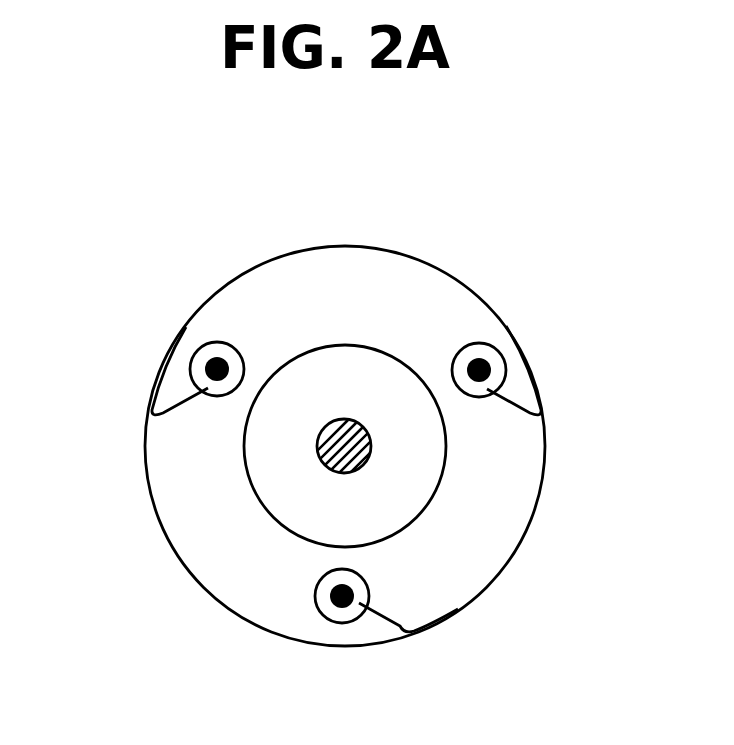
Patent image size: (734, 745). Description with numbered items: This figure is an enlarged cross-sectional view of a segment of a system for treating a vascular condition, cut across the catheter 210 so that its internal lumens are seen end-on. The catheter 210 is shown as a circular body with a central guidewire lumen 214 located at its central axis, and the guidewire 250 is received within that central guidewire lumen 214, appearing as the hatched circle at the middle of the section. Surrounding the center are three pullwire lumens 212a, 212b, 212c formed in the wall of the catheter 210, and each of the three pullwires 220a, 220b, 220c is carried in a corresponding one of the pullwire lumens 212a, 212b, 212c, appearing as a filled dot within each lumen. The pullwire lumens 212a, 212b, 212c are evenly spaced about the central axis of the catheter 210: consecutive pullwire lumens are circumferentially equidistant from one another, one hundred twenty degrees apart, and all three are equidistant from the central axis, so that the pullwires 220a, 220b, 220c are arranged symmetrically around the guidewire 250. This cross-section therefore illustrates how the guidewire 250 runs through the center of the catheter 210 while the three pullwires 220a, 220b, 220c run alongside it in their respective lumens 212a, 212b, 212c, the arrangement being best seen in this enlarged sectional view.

The catheter 210 is at (232, 278).
The central guidewire lumen 214 is at (412, 465).
The guidewire 250 is at (317, 454).
The pullwire 220a is at (206, 363).
The pullwire 220b is at (488, 368).
The pullwire 220c is at (337, 606).
The pullwire lumen 212a is at (155, 408).
The pullwire lumen 212b is at (542, 410).
The pullwire lumen 212c is at (403, 638).